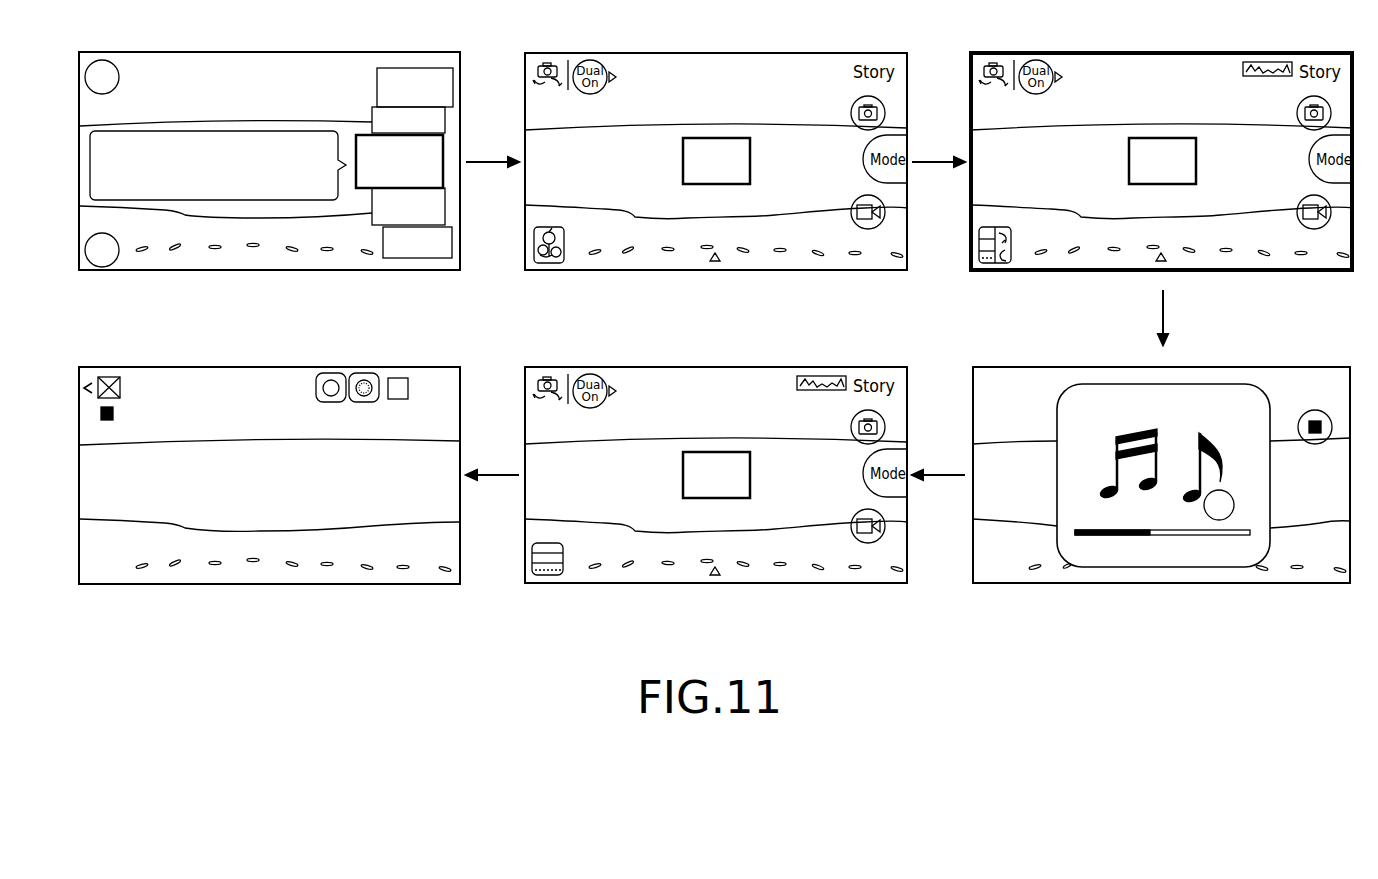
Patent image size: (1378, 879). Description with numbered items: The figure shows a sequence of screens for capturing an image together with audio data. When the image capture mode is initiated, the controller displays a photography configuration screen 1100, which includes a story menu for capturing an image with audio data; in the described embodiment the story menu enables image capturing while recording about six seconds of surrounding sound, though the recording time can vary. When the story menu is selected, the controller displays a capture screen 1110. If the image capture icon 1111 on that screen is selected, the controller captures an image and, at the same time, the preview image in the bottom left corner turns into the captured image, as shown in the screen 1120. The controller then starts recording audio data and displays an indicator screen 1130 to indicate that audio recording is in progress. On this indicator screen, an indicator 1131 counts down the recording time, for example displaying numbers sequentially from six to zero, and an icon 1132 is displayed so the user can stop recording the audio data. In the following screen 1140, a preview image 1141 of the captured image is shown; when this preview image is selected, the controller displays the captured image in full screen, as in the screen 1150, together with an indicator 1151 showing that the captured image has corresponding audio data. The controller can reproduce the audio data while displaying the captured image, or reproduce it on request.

The photography configuration screen 1100 is at (267, 52).
The capture screen 1110 is at (713, 52).
The image capture icon 1111 is at (852, 111).
The screen 1120 is at (1160, 52).
The sound recording screen 1130 is at (1086, 367).
The indicator 1131 is at (1215, 521).
The icon 1132 is at (1311, 410).
The screen 1140 is at (713, 366).
The preview image 1141 is at (545, 583).
The screen 1150 is at (267, 366).
The indicator 1151 is at (114, 413).